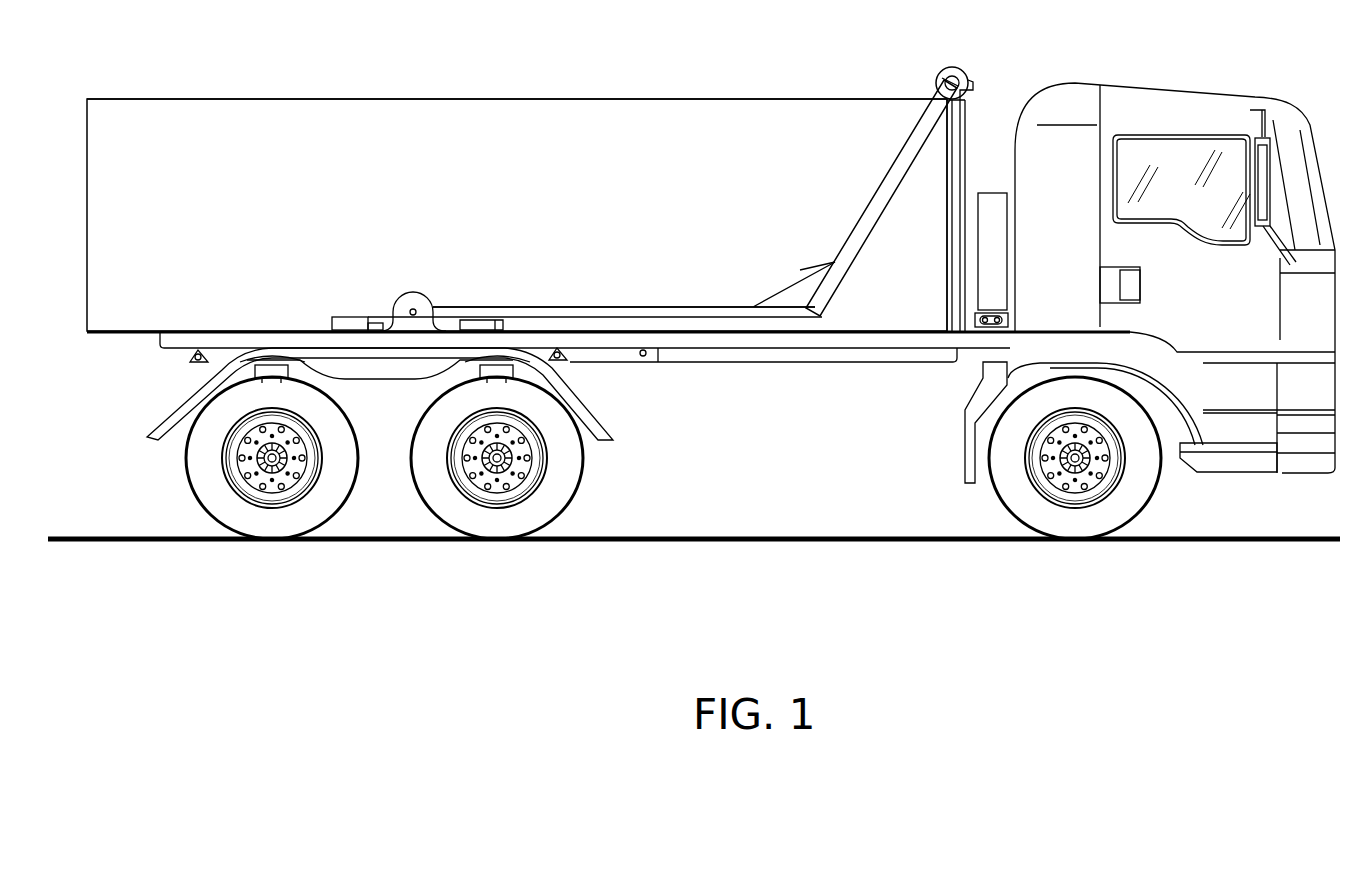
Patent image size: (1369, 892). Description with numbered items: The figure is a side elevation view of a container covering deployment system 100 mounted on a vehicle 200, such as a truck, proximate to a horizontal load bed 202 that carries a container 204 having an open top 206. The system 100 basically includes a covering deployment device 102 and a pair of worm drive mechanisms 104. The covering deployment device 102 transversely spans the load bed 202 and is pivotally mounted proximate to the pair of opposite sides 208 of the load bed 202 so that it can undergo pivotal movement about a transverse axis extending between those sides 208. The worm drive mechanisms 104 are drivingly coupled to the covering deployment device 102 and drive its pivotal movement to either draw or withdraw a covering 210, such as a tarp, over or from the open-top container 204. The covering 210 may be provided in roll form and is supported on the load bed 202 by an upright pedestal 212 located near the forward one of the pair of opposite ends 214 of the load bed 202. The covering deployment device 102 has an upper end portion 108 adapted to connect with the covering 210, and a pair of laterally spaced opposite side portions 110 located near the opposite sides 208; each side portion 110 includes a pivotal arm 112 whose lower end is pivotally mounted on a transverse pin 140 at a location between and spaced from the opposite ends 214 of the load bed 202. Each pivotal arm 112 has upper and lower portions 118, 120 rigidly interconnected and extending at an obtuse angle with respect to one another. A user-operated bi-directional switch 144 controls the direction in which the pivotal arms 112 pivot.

The container covering deployment system 100 is at (629, 193).
The covering deployment device 102 is at (762, 228).
The worm drive mechanism 104 is at (388, 278).
The upper end portion 108 is at (935, 96).
The opposite side portion 110 is at (663, 186).
The pivotal arm 112 is at (720, 302).
The upper portion 118 is at (892, 178).
The lower portion 120 is at (572, 306).
The transverse pin 140 is at (415, 308).
The user-operated bi-directional switch 144 is at (1000, 312).
The vehicle 200 is at (1150, 264).
The load bed 202 is at (763, 371).
The container 204 is at (515, 182).
The open top 206 is at (580, 99).
The opposite side 208 is at (672, 348).
The covering 210 is at (950, 68).
The upright pedestal 212 is at (965, 150).
The opposite end 214 is at (165, 342).